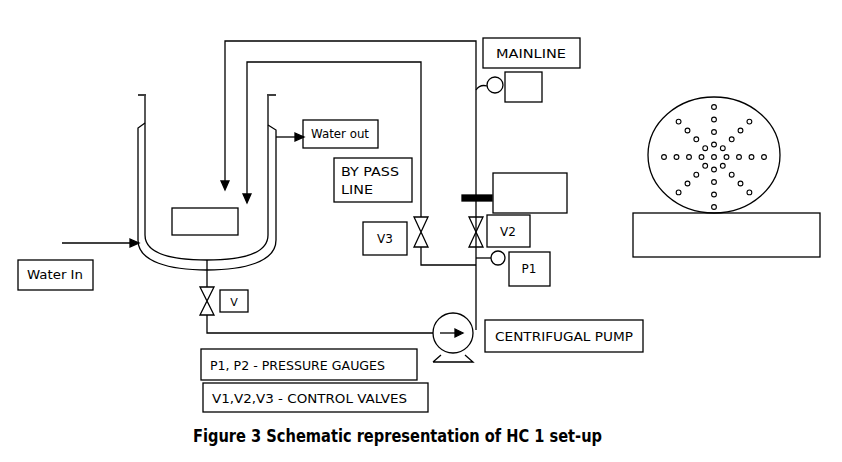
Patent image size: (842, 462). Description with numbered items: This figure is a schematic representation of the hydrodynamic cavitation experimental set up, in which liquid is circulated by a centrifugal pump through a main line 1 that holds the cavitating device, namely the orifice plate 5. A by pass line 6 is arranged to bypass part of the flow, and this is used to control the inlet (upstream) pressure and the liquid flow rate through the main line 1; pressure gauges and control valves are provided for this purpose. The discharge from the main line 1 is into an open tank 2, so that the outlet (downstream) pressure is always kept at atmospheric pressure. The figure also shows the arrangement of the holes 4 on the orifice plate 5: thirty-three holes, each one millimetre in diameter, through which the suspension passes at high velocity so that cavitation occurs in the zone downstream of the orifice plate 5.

The main line 1 is at (509, 87).
The open tank 2 is at (207, 182).
The holes 4 is at (726, 177).
The orifice plate 5 is at (514, 193).
The by pass line 6 is at (348, 173).